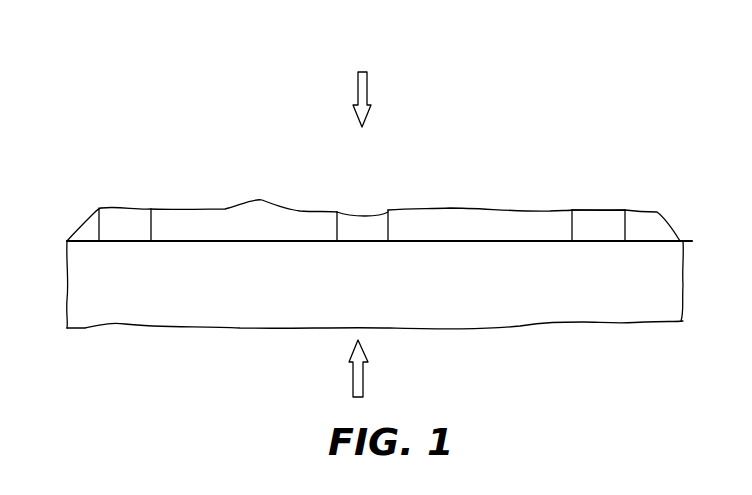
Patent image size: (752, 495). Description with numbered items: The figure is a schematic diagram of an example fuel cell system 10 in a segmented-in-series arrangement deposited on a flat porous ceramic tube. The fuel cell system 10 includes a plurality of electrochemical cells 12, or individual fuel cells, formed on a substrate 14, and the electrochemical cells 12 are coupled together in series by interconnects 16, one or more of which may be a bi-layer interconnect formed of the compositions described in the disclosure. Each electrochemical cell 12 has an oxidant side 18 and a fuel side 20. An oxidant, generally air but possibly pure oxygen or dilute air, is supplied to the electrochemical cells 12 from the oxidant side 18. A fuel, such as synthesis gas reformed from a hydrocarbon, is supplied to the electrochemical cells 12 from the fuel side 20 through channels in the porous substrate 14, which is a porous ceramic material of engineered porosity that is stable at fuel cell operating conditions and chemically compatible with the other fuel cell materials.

The fuel cell system 10 is at (544, 73).
The electrochemical cells 12 is at (210, 209).
The substrate 14 is at (585, 322).
The interconnects 16 is at (361, 213).
The oxidant side 18 is at (355, 83).
The fuel side 20 is at (373, 367).